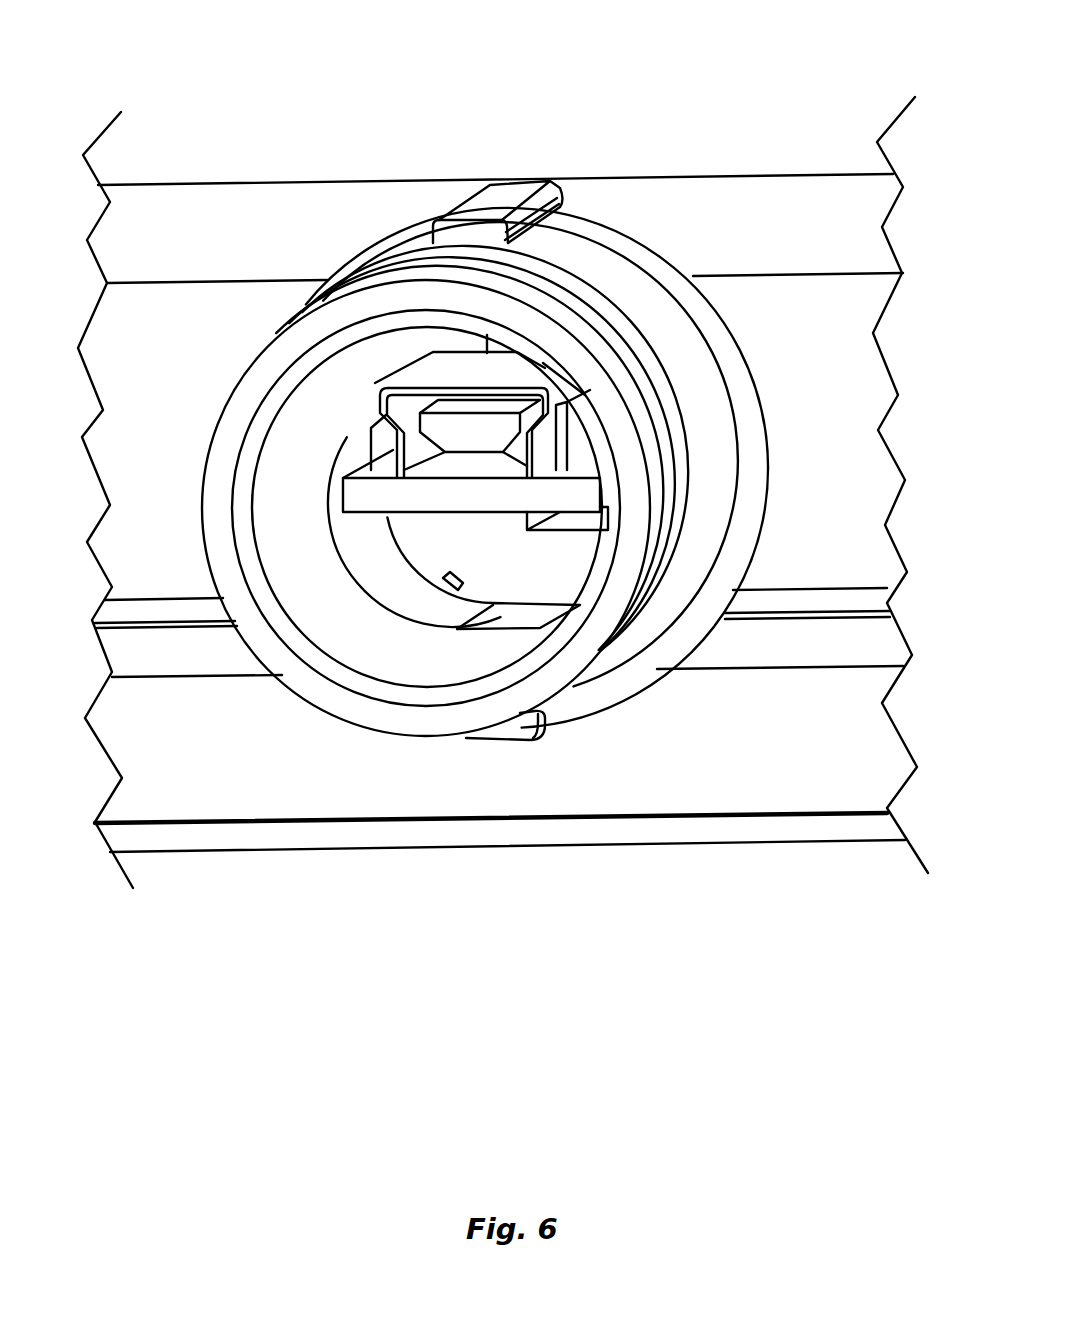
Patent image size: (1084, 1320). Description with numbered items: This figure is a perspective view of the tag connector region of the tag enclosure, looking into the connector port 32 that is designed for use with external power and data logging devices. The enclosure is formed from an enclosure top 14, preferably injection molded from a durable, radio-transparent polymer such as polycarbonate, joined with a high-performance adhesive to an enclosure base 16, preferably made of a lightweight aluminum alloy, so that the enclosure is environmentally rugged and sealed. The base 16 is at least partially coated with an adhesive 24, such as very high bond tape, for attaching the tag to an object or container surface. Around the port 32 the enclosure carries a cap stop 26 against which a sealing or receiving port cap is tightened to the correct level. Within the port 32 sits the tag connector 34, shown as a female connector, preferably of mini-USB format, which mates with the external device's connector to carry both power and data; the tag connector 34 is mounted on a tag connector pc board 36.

The enclosure top 14 is at (325, 218).
The enclosure base 16 is at (616, 826).
The adhesive 24 is at (700, 842).
The cap stop 26 is at (504, 202).
The connector port 32 is at (593, 262).
The tag connector 34 is at (477, 430).
The tag connector pc board 36 is at (488, 497).